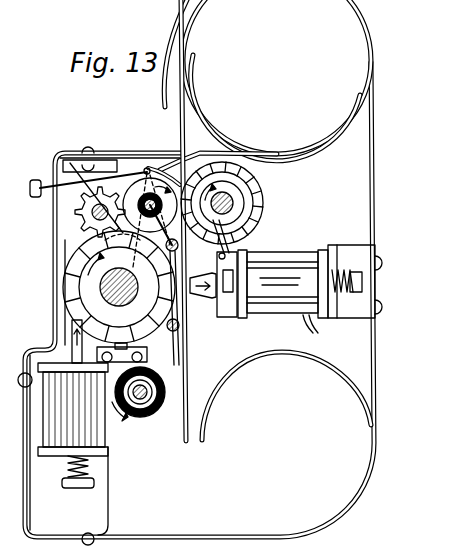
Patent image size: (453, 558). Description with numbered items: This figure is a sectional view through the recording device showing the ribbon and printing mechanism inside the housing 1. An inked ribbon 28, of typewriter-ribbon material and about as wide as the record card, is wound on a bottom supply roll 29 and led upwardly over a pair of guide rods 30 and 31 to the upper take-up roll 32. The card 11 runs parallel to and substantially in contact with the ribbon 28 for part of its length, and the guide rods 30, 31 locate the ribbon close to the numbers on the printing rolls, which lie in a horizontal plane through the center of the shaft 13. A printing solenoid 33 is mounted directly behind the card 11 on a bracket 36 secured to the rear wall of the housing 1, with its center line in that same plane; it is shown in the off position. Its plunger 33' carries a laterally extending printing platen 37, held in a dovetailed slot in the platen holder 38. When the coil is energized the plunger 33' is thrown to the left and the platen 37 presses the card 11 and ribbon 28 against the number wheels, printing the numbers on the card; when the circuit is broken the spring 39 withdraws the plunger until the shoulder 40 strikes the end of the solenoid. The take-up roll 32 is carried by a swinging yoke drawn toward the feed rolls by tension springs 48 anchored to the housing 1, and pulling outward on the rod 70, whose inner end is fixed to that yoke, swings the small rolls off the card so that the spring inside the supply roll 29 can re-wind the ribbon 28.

The housing 1 is at (372, 152).
The card 11 is at (178, 128).
The shaft 13 is at (100, 285).
The inked ribbon 28 is at (178, 362).
The bottom supply roll 29 is at (140, 417).
The guide rod 30 is at (172, 332).
The guide rod 31 is at (179, 245).
The upper take-up roll 32 is at (133, 170).
The printing solenoid 33 is at (282, 267).
The plunger 33' is at (230, 287).
The bracket 36 is at (347, 257).
The printing platen 37 is at (218, 284).
The platen holder 38 is at (220, 308).
The spring 39 is at (338, 298).
The shoulder 40 is at (248, 265).
The spring 48 is at (227, 157).
The rod 70 is at (92, 212).